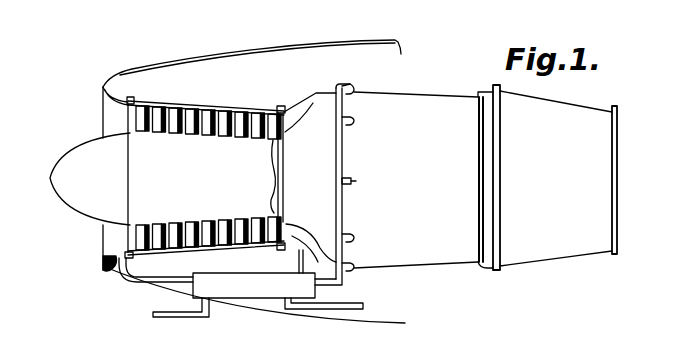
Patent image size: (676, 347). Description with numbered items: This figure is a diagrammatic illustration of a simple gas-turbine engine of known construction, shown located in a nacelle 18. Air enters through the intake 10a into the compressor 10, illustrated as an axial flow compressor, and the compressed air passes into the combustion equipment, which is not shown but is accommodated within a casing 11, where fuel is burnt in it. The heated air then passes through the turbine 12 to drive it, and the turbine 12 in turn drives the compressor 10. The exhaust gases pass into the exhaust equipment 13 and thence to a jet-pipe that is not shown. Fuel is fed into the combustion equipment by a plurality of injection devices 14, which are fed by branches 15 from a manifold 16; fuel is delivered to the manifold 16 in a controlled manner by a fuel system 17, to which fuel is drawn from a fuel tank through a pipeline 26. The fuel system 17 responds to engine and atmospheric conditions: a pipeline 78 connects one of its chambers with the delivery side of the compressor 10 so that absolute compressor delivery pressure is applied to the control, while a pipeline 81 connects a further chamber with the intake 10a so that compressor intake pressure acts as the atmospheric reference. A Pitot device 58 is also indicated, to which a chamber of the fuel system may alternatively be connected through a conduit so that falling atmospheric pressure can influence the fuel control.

The compressor 10 is at (208, 107).
The intake 10a is at (118, 115).
The casing 11 is at (437, 252).
The turbine 12 is at (490, 264).
The exhaust equipment 13 is at (570, 243).
The injection devices 14 is at (357, 181).
The branches 15 is at (350, 117).
The manifold 16 is at (336, 165).
The fuel system 17 is at (262, 284).
The nacelle 18 is at (137, 71).
The pipeline 26 is at (356, 301).
The Pitot device 58 is at (165, 318).
The pipeline 78 is at (297, 265).
The pipeline 81 is at (130, 280).